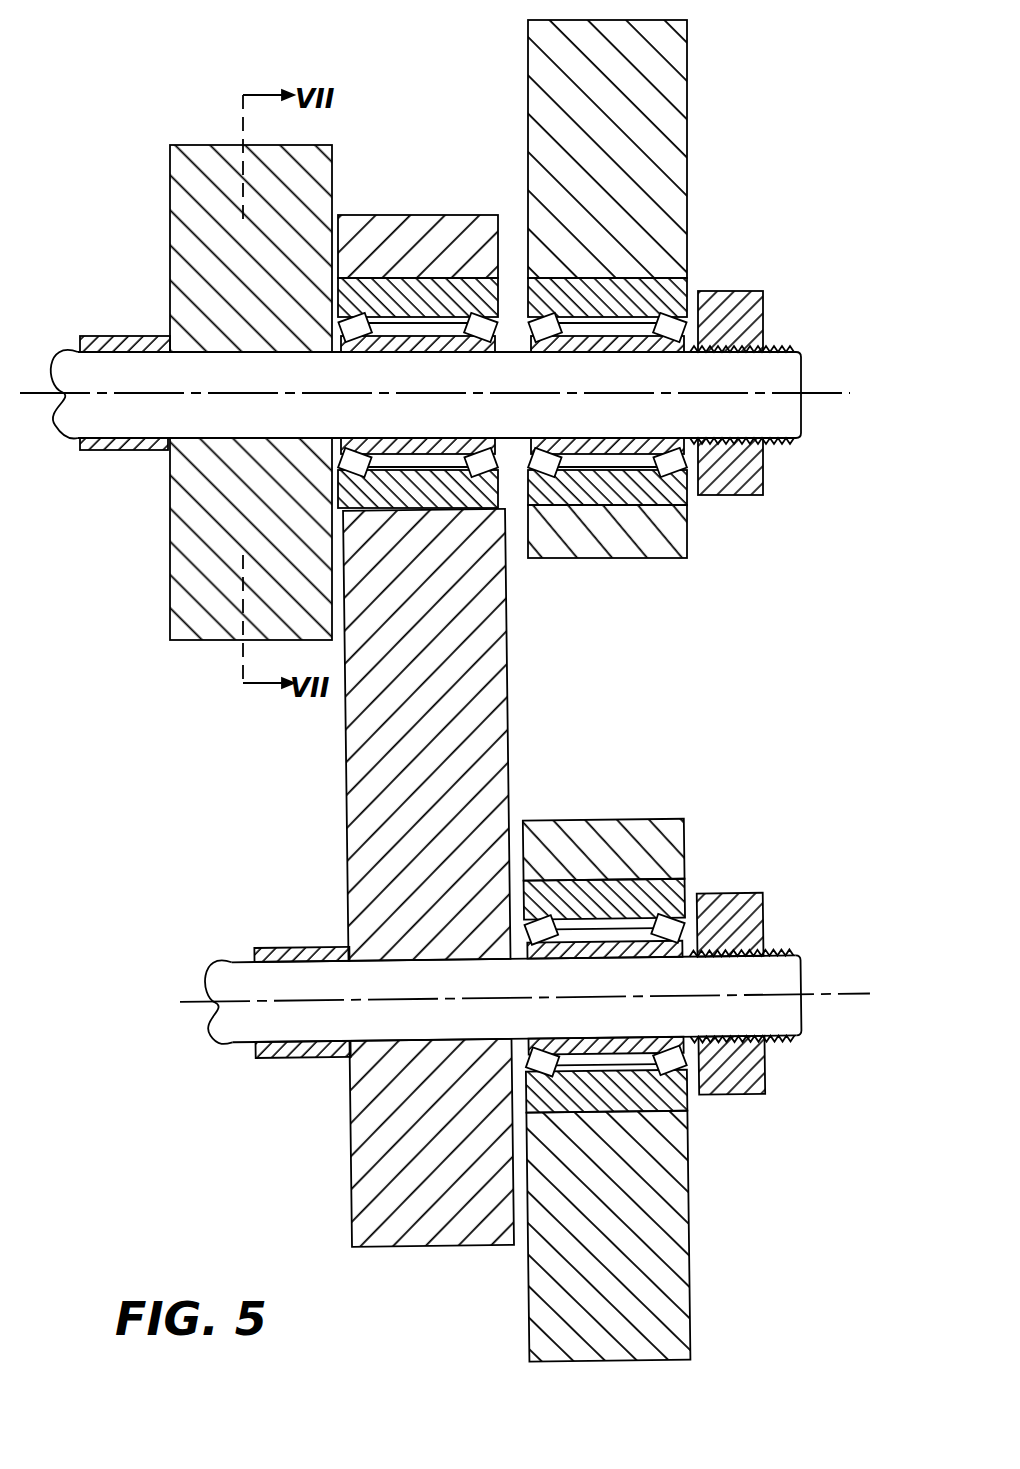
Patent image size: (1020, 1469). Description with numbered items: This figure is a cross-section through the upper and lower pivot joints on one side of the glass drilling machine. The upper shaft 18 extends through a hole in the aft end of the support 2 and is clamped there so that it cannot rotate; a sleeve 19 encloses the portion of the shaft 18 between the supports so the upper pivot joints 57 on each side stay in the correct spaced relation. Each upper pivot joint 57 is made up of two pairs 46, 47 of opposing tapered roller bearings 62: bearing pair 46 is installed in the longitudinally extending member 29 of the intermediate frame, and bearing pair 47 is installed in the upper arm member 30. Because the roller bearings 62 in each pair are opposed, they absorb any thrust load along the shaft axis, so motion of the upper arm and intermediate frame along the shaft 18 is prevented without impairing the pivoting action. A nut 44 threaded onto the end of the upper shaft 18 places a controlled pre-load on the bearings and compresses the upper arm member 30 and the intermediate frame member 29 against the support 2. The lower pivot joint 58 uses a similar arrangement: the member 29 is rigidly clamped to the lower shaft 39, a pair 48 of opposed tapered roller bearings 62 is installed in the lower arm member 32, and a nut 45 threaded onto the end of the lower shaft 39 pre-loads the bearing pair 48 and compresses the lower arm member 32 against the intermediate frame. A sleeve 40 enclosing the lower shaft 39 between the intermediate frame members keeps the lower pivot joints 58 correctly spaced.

The support 2 is at (170, 594).
The upper shaft 18 is at (78, 447).
The sleeve 19 is at (108, 336).
The longitudinally extending member 29 is at (343, 794).
The upper arm member 30 is at (688, 120).
The lower arm member 32 is at (690, 1295).
The lower shaft 39 is at (233, 1047).
The sleeve 40 is at (272, 946).
The nut 44 is at (765, 293).
The nut 45 is at (765, 893).
The bearing pair 46 is at (483, 508).
The bearing pair 47 is at (630, 506).
The bearing pair 48 is at (688, 1128).
The upper pivot joint 57 is at (690, 290).
The lower pivot joint 58 is at (690, 878).
The tapered roller bearing 62 is at (478, 316).